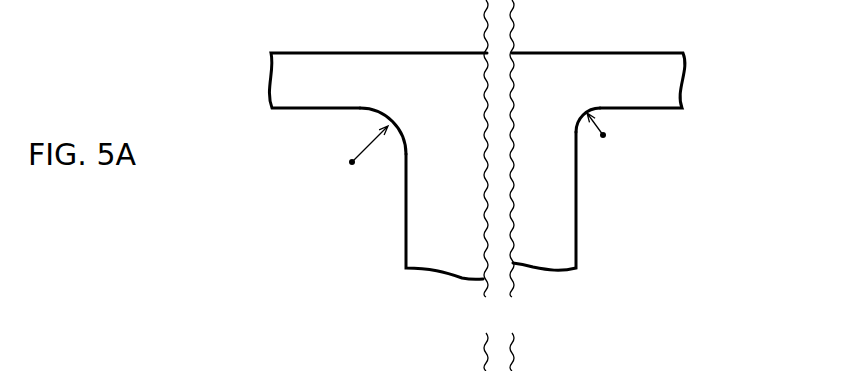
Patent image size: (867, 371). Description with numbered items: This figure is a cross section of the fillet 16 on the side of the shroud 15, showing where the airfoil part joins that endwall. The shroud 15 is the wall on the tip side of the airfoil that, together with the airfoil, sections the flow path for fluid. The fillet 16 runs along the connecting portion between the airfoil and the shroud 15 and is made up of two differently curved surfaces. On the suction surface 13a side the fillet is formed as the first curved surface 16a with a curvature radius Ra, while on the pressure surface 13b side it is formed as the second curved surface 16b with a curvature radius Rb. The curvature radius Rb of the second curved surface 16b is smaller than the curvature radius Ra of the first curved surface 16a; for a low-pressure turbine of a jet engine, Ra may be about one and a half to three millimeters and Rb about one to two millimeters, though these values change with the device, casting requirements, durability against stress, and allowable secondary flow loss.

The shroud 15 is at (312, 108).
The fillet 16 is at (483, 77).
The first curved surface 16a is at (392, 128).
The second curved surface 16b is at (582, 117).
The suction surface 13a is at (406, 198).
The pressure surface 13b is at (577, 203).
The curvature radius of the first curved surface Ra is at (377, 138).
The curvature radius of the second curved surface Rb is at (605, 131).